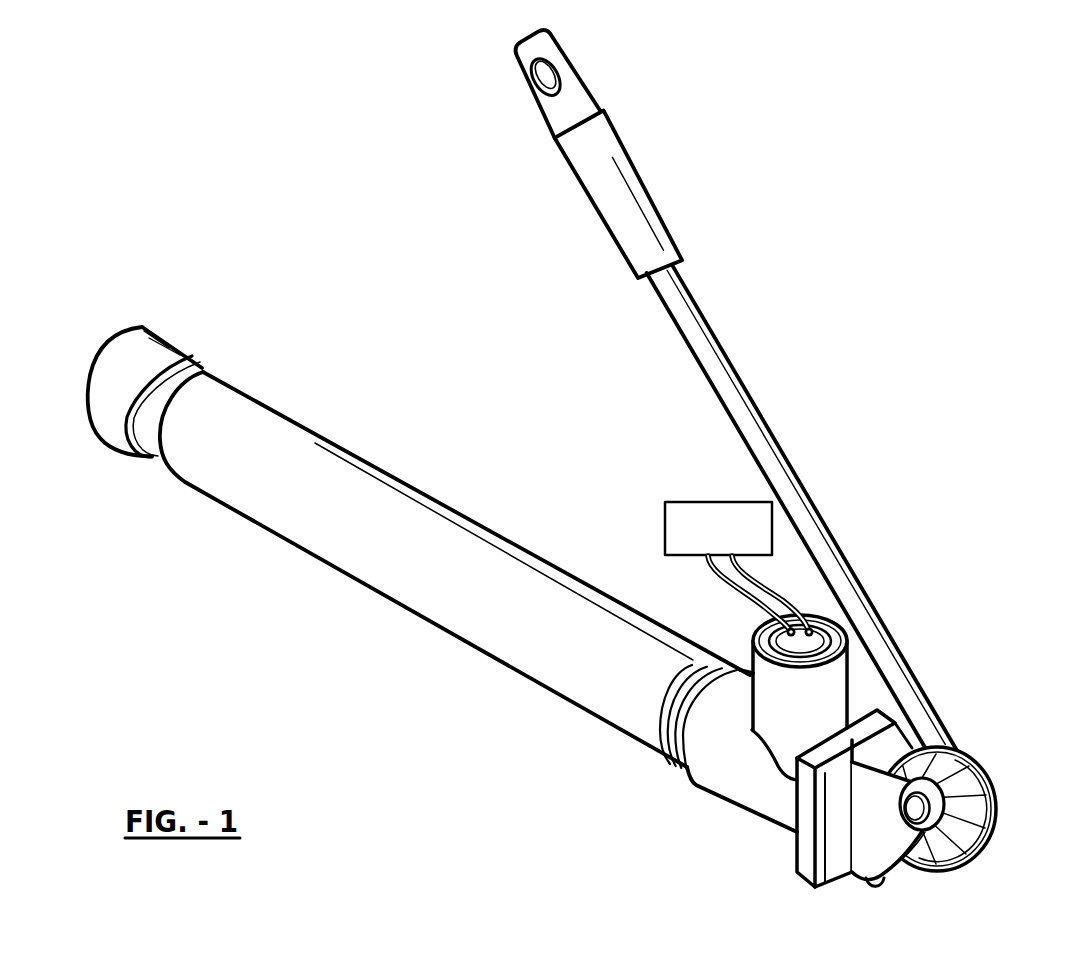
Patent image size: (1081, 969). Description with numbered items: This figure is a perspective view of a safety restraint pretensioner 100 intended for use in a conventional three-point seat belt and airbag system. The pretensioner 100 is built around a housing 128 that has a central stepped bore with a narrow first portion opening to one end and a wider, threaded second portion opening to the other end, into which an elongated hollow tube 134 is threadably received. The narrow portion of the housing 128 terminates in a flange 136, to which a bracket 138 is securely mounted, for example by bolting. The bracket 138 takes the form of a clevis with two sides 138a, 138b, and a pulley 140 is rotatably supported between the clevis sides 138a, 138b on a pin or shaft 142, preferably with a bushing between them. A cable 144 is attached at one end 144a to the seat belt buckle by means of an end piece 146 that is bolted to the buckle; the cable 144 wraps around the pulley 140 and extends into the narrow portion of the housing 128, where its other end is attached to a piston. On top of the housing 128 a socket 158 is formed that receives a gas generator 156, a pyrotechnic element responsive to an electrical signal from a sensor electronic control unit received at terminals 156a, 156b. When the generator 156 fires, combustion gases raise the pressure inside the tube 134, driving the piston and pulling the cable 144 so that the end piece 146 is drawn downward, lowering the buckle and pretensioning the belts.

The pretensioner 100 is at (348, 353).
The housing 128 is at (737, 783).
The elongated hollow tube 134 is at (375, 522).
The flange 136 is at (867, 727).
The bracket 138 is at (907, 849).
The clevis side 138a is at (872, 882).
The clevis side 138b is at (898, 862).
The pulley 140 is at (927, 750).
The pin or shaft 142 is at (923, 815).
The cable 144 is at (717, 377).
The cable end 144a is at (667, 288).
The end piece 146 is at (567, 98).
The gas generator 156 is at (753, 640).
The terminal 156a is at (765, 620).
The terminal 156b is at (848, 637).
The socket 158 is at (790, 688).